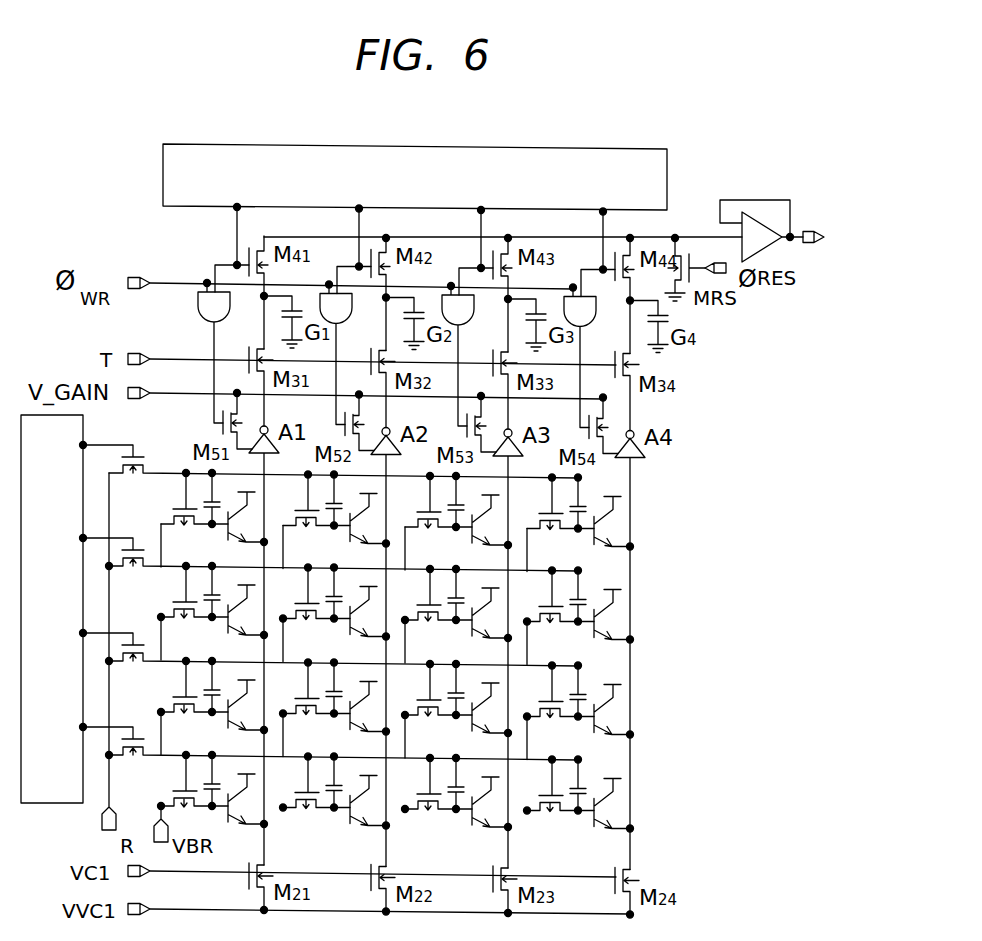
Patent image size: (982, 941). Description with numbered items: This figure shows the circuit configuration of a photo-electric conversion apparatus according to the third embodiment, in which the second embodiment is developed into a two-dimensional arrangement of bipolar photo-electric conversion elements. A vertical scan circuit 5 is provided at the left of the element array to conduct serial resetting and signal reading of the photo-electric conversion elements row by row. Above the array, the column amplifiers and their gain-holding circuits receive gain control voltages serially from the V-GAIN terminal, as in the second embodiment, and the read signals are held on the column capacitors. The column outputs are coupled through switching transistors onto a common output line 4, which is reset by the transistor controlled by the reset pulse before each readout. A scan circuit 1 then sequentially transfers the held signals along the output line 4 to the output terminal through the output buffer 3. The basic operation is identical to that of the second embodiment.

The scan circuit 1 is at (667, 163).
The output buffer 3 is at (768, 246).
The output line 4 is at (675, 238).
The vertical scan circuit 5 is at (40, 803).